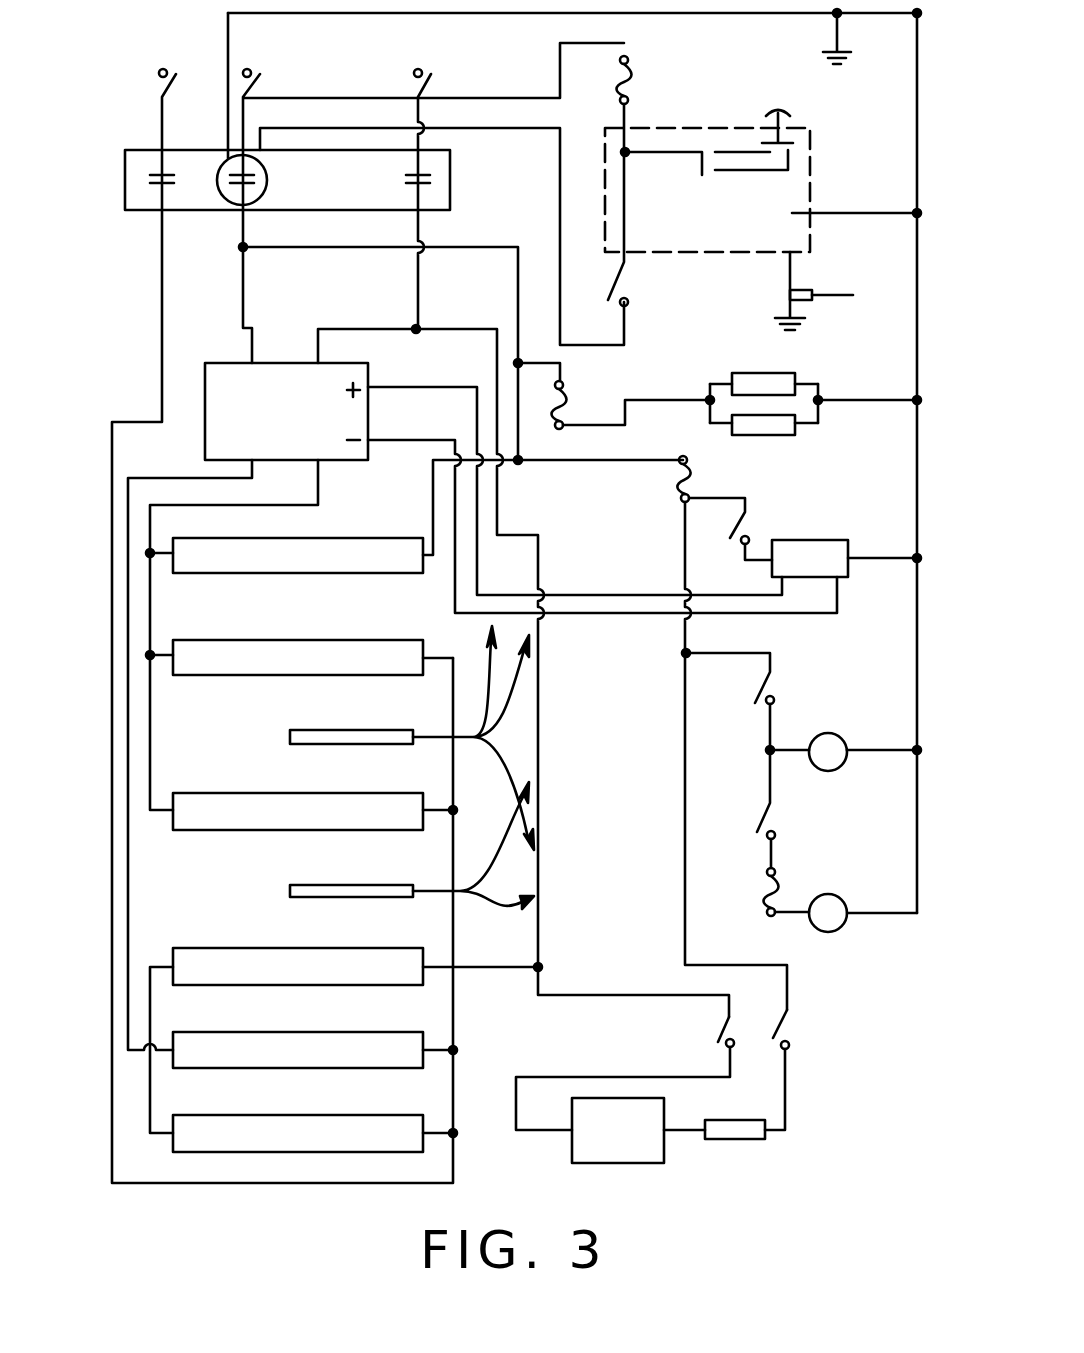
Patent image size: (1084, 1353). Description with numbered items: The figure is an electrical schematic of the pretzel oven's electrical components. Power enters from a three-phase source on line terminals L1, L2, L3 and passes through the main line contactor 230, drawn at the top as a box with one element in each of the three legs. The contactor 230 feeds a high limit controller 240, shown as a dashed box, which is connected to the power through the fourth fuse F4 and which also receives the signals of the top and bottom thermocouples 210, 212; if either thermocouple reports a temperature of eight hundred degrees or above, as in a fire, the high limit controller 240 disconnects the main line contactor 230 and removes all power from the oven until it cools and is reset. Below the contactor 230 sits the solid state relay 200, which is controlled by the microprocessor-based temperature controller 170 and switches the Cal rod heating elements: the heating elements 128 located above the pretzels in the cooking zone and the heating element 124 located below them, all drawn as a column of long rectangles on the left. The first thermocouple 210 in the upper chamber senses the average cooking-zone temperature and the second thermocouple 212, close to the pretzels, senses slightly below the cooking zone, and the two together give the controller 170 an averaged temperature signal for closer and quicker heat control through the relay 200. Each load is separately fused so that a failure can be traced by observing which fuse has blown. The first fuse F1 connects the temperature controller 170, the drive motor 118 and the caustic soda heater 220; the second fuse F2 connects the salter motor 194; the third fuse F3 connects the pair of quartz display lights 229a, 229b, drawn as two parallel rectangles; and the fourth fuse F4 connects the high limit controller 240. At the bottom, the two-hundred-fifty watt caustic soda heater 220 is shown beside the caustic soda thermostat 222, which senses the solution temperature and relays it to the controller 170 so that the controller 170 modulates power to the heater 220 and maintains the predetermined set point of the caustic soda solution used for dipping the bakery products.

The main line contactor 230 is at (152, 160).
The high limit controller 240 is at (723, 140).
The solid state relay 200 is at (230, 367).
The quartz display light 229a is at (775, 380).
The quartz display light 229b is at (770, 428).
The microprocessor-based temperature controller 170 is at (803, 548).
The drive motor 118 is at (838, 725).
The salter motor 194 is at (830, 905).
The heating element 128 is at (272, 575).
The heating element 124 is at (282, 1045).
The first thermocouple 210 is at (295, 745).
The second thermocouple 212 is at (290, 886).
The caustic soda heater 220 is at (602, 1140).
The caustic soda thermostat 222 is at (730, 1133).
The first fuse F1 is at (678, 482).
The second fuse F2 is at (765, 888).
The third fuse F3 is at (570, 385).
The fourth fuse F4 is at (632, 72).
The line terminal L1 is at (282, 608).
The line terminal L2 is at (431, 198).
The line terminal L3 is at (442, 189).